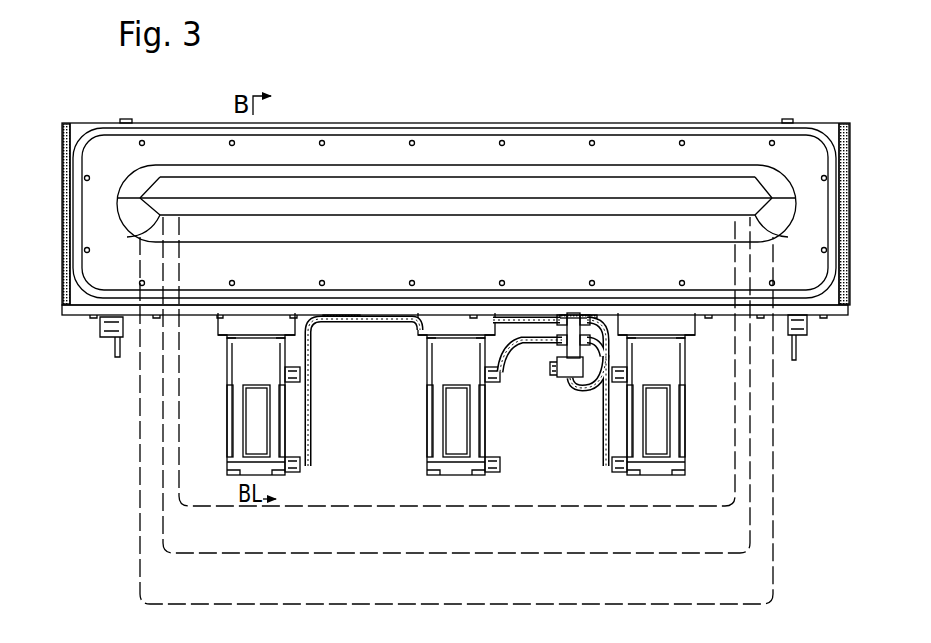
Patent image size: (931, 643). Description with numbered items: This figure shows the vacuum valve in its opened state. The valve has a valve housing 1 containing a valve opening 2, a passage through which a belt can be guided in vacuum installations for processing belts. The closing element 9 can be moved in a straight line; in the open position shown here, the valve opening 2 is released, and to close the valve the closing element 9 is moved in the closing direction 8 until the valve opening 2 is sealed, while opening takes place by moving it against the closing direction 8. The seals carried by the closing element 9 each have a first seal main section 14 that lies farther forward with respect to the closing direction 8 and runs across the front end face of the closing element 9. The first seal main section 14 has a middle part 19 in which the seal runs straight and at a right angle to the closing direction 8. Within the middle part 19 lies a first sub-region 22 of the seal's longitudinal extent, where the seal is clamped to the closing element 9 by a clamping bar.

The valve housing 1 is at (393, 118).
The valve opening 2 is at (467, 195).
The closing direction 8 is at (43, 193).
The closing element 9 is at (771, 220).
The first seal main section 14 is at (440, 604).
The middle part 19 is at (440, 553).
The first sub-region 22 is at (440, 506).